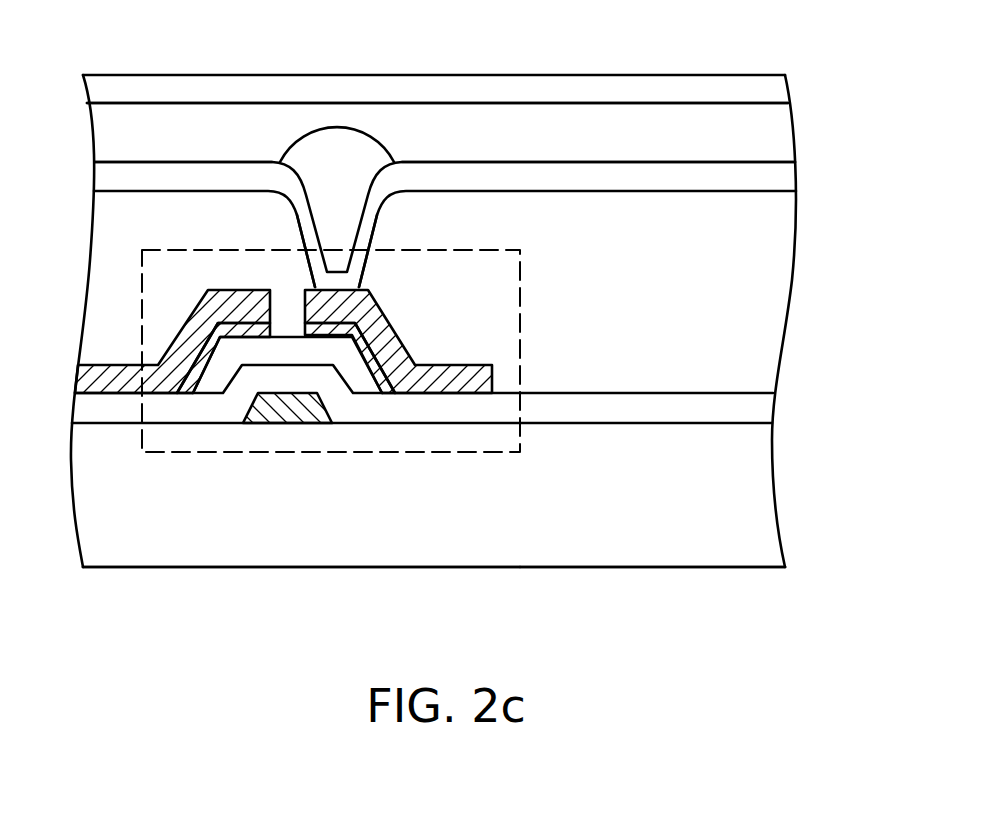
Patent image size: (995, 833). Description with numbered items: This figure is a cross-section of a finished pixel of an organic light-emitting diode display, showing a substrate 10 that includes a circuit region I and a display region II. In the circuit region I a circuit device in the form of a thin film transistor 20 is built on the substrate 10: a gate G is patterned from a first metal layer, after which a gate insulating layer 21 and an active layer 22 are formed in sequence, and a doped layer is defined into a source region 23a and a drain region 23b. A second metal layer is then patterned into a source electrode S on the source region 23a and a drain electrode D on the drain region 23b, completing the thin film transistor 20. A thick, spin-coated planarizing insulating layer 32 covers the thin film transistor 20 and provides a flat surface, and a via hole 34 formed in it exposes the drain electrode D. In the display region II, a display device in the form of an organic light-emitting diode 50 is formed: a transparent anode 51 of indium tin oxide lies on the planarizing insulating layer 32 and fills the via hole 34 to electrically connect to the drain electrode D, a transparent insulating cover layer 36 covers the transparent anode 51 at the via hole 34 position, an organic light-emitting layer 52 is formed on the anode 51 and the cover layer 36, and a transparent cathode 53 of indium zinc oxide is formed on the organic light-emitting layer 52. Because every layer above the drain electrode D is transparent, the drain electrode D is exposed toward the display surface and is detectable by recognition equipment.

The substrate 10 is at (763, 497).
The thin film transistor 20 is at (198, 453).
The gate insulating layer 21 is at (88, 408).
The active layer 22 is at (203, 378).
The source region 23a is at (213, 346).
The drain region 23b is at (362, 343).
The planarizing insulating layer 32 is at (108, 220).
The via hole 34 is at (376, 220).
The transparent insulating cover layer 36 is at (337, 137).
The organic light-emitting diode 50 is at (500, 136).
The transparent anode 51 is at (787, 178).
The organic light-emitting layer 52 is at (782, 135).
The cathode 53 is at (775, 92).
The gate G is at (288, 415).
The source electrode S is at (215, 308).
The drain electrode D is at (358, 310).
The circuit region I is at (373, 573).
The display region II is at (682, 573).